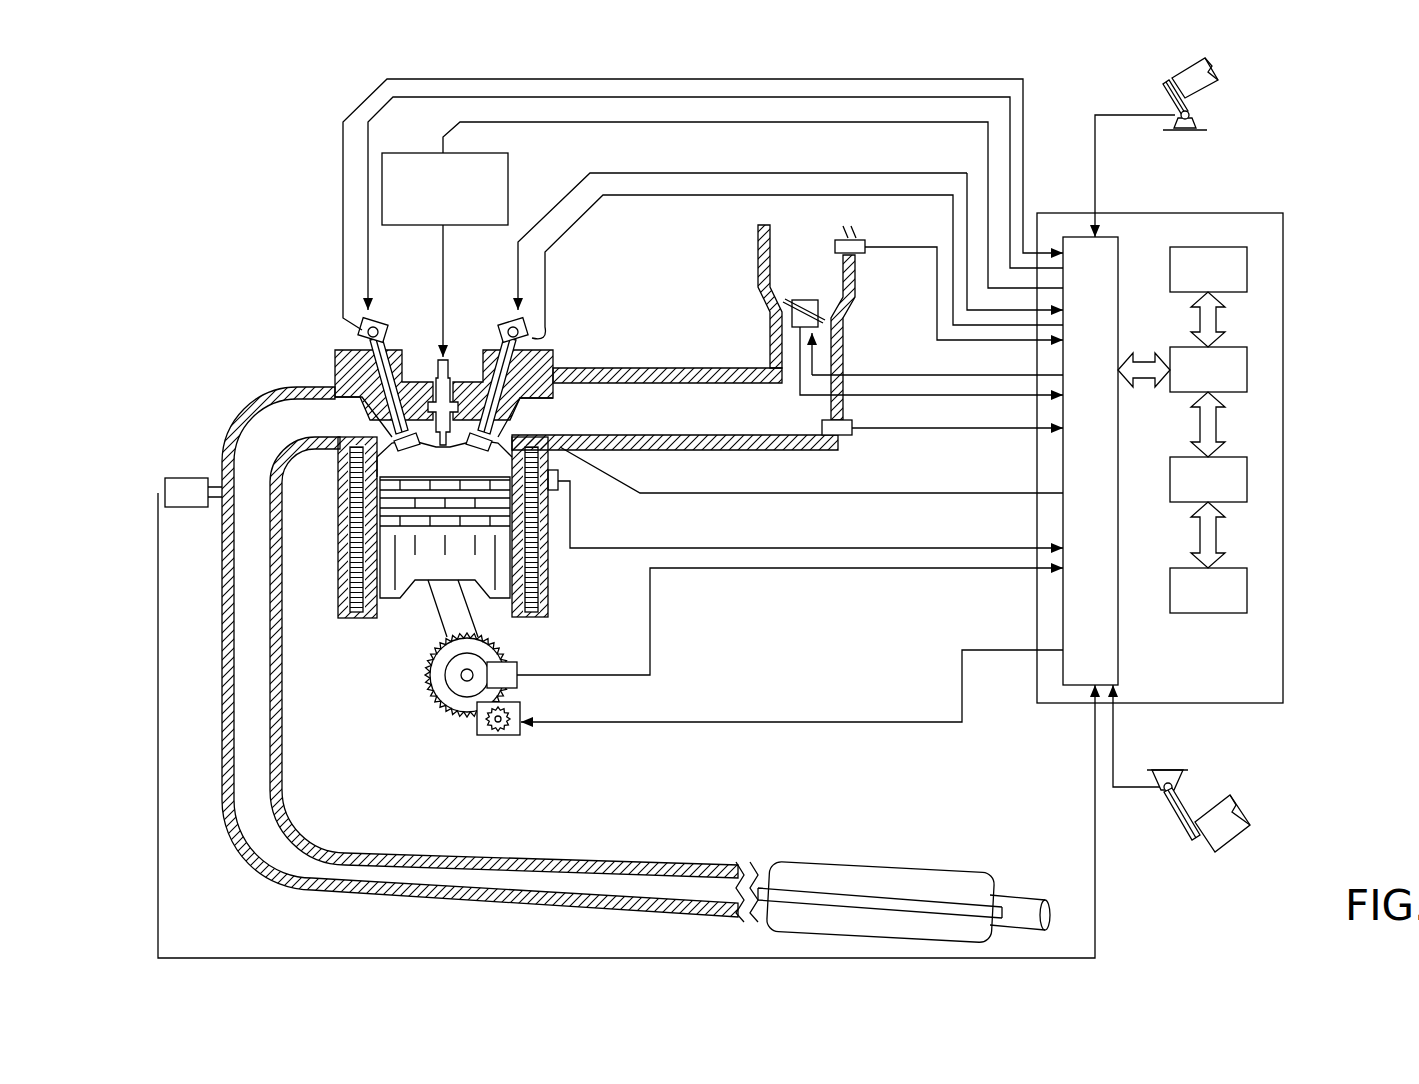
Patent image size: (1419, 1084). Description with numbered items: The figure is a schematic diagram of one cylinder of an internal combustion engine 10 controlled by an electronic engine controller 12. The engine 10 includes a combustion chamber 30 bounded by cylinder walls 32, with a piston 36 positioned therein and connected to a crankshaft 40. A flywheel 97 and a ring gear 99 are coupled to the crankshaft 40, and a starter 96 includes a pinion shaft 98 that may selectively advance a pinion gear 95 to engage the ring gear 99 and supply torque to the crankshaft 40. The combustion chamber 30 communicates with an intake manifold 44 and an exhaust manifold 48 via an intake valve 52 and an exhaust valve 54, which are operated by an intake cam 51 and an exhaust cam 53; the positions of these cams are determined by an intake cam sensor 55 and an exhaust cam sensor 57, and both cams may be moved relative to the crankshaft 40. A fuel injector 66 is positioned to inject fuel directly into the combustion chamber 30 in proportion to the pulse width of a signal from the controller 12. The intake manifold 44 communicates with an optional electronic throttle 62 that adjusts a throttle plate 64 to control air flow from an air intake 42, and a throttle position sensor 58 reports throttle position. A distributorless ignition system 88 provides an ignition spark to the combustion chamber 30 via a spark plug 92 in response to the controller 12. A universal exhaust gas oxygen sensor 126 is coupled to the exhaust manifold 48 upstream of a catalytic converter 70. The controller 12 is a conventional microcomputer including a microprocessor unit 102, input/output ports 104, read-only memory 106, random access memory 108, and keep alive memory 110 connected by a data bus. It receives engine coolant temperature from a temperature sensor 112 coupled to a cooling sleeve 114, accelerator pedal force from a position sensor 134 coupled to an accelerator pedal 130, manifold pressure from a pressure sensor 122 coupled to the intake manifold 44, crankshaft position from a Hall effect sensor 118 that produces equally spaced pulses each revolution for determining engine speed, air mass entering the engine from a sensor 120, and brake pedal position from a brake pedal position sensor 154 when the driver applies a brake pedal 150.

The internal combustion engine 10 is at (266, 298).
The electronic engine controller 12 is at (1209, 440).
The combustion chamber 30 is at (340, 573).
The cylinder walls 32 is at (378, 612).
The piston 36 is at (432, 590).
The crankshaft 40 is at (442, 696).
The air intake 42 is at (889, 322).
The intake manifold 44 is at (722, 425).
The exhaust manifold 48 is at (290, 430).
The intake cam 51 is at (523, 349).
The intake valve 52 is at (500, 427).
The exhaust cam 53 is at (437, 351).
The exhaust valve 54 is at (400, 438).
The intake cam sensor 55 is at (535, 334).
The exhaust cam sensor 57 is at (355, 336).
The throttle position sensor 58 is at (777, 340).
The electronic throttle 62 is at (828, 312).
The throttle plate 64 is at (780, 308).
The fuel injector 66 is at (548, 450).
The catalytic converter 70 is at (780, 858).
The distributorless ignition system 88 is at (400, 153).
The spark plug 92 is at (450, 365).
The pinion gear 95 is at (508, 740).
The starter 96 is at (750, 720).
The flywheel 97 is at (438, 672).
The pinion shaft 98 is at (490, 735).
The ring gear 99 is at (455, 690).
The microprocessor unit 102 is at (1247, 370).
The input/output ports 104 is at (1120, 243).
The read-only memory 106 is at (1247, 268).
The random access memory 108 is at (1247, 478).
The keep alive memory 110 is at (1247, 588).
The temperature sensor 112 is at (560, 487).
The cooling sleeve 114 is at (545, 570).
The Hall effect sensor 118 is at (520, 665).
The air mass sensor 120 is at (852, 238).
The pressure sensor 122 is at (848, 435).
The Universal Exhaust Gas Oxygen sensor 126 is at (165, 482).
The accelerator pedal 130 is at (1221, 138).
The position sensor 134 is at (1195, 115).
The brake pedal 150 is at (1181, 776).
The brake pedal position sensor 154 is at (1157, 786).